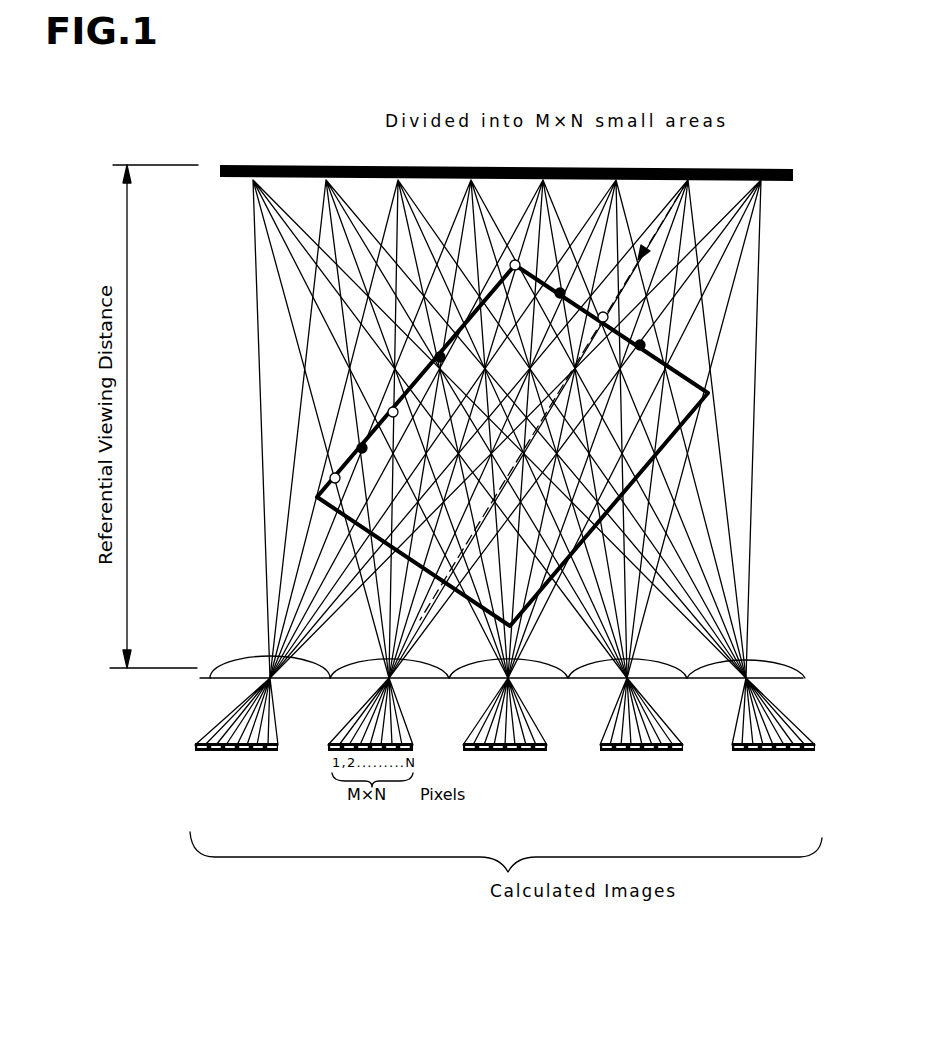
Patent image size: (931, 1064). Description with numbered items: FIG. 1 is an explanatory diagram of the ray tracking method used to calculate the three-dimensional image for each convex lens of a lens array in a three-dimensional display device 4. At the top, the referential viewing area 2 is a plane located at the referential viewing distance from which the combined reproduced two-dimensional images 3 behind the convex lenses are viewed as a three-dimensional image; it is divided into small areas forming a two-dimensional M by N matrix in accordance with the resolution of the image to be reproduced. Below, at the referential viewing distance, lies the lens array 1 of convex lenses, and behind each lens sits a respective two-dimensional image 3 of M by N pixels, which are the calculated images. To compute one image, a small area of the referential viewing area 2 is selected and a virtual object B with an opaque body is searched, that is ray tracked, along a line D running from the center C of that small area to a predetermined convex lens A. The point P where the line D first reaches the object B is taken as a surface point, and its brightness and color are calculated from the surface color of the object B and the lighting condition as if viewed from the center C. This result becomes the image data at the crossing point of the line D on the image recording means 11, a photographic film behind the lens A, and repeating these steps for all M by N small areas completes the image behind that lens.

The lens array 1 is at (502, 673).
The referential viewing area 2 is at (793, 160).
The two-dimensional image 3 is at (585, 722).
The three-dimensional display device 4 is at (814, 488).
The image recording means 11 is at (198, 747).
The convex lens A is at (357, 673).
The virtual object B is at (687, 375).
The center of small area C is at (688, 170).
The line D is at (657, 229).
The surface point P is at (607, 318).